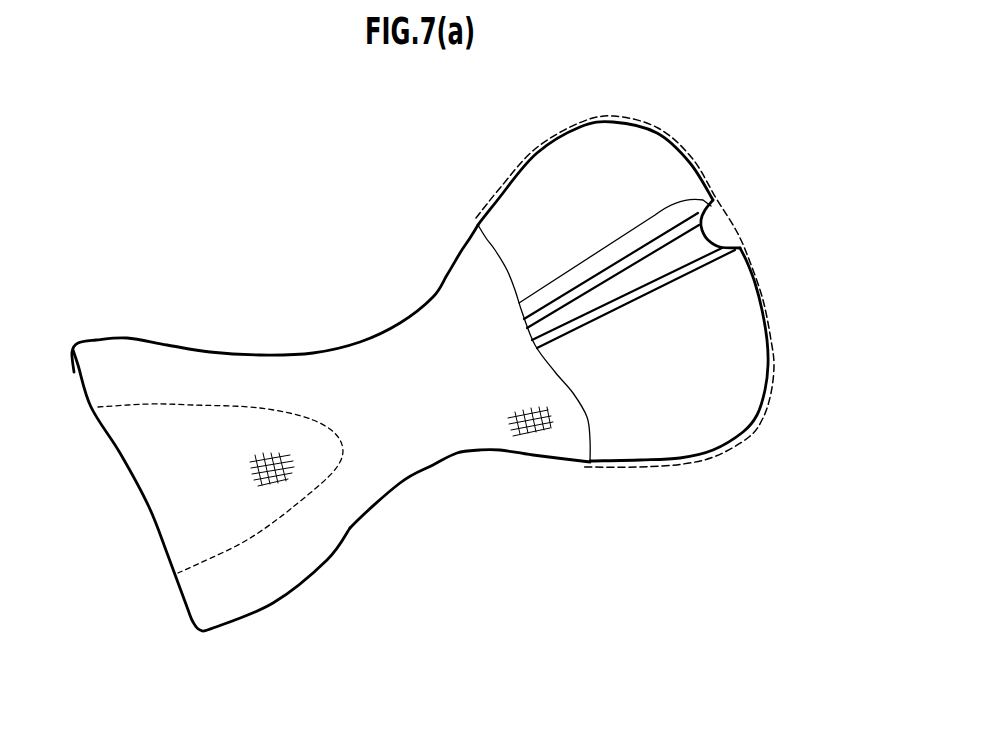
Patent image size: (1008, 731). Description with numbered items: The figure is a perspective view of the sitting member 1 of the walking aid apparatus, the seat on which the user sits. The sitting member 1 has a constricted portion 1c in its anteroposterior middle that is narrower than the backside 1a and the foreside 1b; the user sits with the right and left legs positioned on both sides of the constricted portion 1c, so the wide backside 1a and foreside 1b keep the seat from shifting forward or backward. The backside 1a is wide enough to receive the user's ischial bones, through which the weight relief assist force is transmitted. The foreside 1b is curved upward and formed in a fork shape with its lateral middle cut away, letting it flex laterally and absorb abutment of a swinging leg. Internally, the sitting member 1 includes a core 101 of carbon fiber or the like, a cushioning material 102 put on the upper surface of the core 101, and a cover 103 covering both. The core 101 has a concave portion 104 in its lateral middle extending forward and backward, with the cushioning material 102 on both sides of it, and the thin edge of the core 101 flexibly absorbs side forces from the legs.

The sitting member 1 is at (331, 449).
The backside 1a is at (662, 292).
The foreside 1b is at (277, 610).
The constricted portion 1c is at (433, 465).
The core 101 is at (684, 220).
The cushioning material 102 is at (607, 133).
The cover 103 is at (537, 447).
The concave portion 104 is at (733, 232).